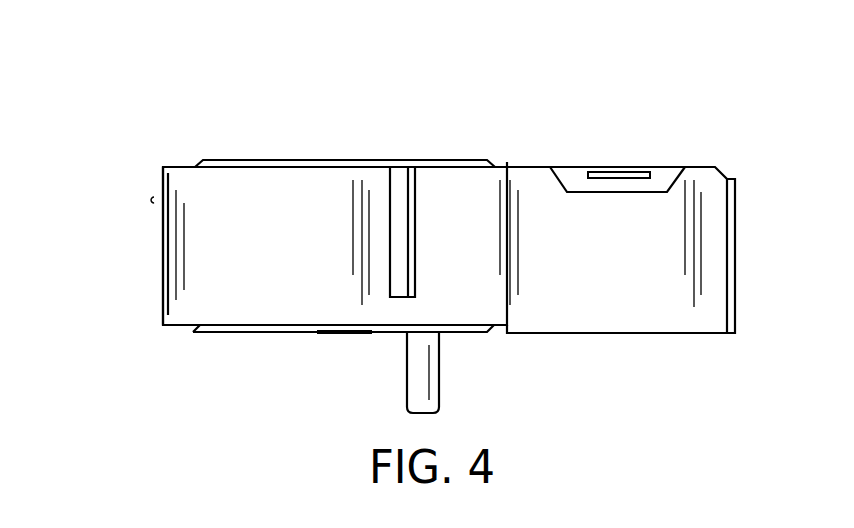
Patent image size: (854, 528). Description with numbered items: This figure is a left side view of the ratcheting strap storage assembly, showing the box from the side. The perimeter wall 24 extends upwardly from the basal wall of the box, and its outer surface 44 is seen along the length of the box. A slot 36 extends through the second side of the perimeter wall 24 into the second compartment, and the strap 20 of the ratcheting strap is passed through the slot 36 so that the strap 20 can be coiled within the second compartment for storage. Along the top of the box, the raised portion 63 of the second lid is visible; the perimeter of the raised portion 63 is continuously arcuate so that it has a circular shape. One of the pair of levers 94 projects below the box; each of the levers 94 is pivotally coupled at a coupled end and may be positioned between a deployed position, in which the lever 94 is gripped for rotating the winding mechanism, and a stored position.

The strap 20 is at (598, 333).
The perimeter wall 24 is at (205, 265).
The slot 36 is at (403, 162).
The outer surface 44 is at (241, 272).
The raised portion 63 is at (283, 166).
The levers 94 is at (413, 387).